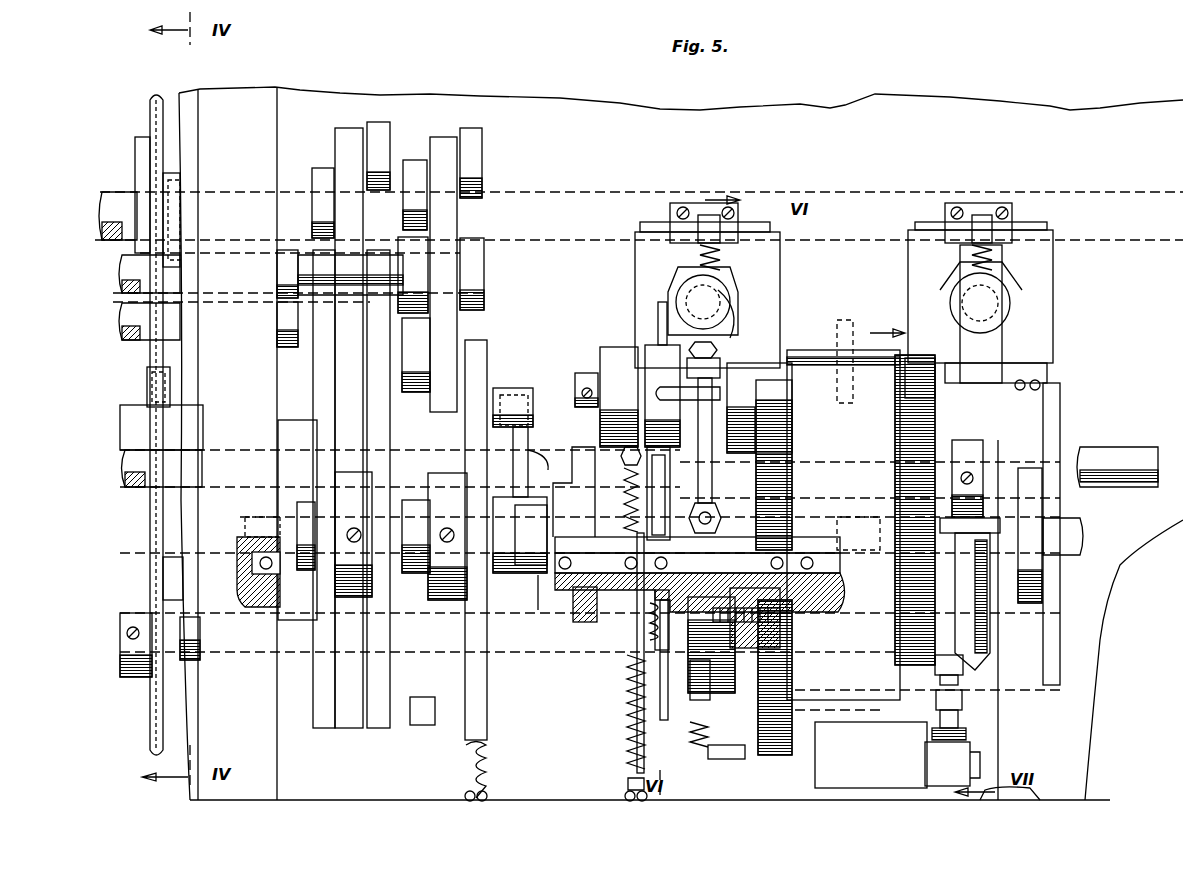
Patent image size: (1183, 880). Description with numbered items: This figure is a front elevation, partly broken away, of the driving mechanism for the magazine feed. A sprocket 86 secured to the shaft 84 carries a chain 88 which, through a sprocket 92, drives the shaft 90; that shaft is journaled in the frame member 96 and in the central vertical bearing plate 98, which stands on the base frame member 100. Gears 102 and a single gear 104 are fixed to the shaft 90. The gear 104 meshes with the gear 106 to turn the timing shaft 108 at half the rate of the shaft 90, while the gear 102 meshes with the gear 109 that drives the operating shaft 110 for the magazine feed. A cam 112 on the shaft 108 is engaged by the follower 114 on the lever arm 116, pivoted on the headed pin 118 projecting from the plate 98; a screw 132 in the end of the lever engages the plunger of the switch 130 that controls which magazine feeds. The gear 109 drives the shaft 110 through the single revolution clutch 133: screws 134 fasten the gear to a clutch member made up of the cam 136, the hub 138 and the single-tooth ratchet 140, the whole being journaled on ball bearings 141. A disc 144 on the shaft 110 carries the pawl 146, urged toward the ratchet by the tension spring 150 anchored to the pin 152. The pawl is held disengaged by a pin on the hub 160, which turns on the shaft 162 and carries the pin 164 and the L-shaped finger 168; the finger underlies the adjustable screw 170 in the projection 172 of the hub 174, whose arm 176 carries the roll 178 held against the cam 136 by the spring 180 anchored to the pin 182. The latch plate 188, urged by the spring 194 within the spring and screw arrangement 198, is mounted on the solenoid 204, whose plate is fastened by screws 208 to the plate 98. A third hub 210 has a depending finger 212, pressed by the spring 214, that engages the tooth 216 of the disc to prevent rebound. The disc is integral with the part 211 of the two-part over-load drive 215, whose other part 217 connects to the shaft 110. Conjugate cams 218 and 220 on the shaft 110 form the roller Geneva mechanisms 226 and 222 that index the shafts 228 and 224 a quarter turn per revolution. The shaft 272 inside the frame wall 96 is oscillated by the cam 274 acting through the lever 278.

The shaft 84 is at (124, 192).
The sprocket 86 is at (150, 102).
The chain 88 is at (147, 386).
The shaft 90 is at (518, 547).
The sprocket 92 is at (150, 740).
The frame member 96 is at (278, 580).
The central vertical bearing plate 98 is at (862, 598).
The base frame member 100 is at (408, 798).
The gear 102 is at (764, 757).
The single gear 104 is at (740, 685).
The gear 106 is at (740, 425).
The timing shaft 108 is at (822, 462).
The gear 109 is at (780, 665).
The operating shaft 110 is at (828, 512).
The cam 112 is at (940, 432).
The follower 114 is at (1011, 535).
The lever arm 116 is at (992, 632).
The headed pin 118 is at (966, 708).
The switch 130 is at (970, 745).
The screw 132 is at (965, 670).
The single revolution clutch 133 is at (594, 696).
The screws 134 is at (782, 618).
The cam 136 is at (782, 650).
The hub 138 is at (662, 648).
The ratchet 140 is at (640, 600).
The ball bearings 141 is at (760, 567).
The disc 144 is at (660, 690).
The pawl 146 is at (693, 544).
The tension spring 150 is at (628, 628).
The pin 152 is at (637, 658).
The hub 160 is at (636, 348).
The shaft 162 is at (578, 385).
The pin 164 is at (655, 312).
The L-shaped finger 168 is at (690, 410).
The adjustable screw 170 is at (718, 343).
The projection 172 is at (720, 366).
The hub 174 is at (744, 314).
The arm 176 is at (672, 476).
The roll 178 is at (745, 550).
The spring 180 is at (690, 740).
The pin 182 is at (712, 760).
The latch plate 188 is at (728, 292).
The spring 194 is at (700, 258).
The spring 198 is at (698, 278).
The solenoid 204 is at (782, 300).
The screws 208 is at (856, 355).
The third hub 210 is at (600, 342).
The part of two-part over-load drive 211 is at (572, 620).
The depending finger 212 is at (620, 542).
The spring 214 is at (627, 728).
The two-part over-load drive 215 is at (558, 438).
The tooth 216 is at (626, 533).
The part of two-part over-load drive 217 is at (553, 593).
The conjugate cams 218 is at (332, 728).
The conjugate cams 220 is at (440, 727).
The roller Geneva mechanism 222 is at (492, 327).
The shaft 224 is at (122, 280).
The roller Geneva mechanism 226 is at (385, 120).
The shaft 228 is at (122, 336).
The shaft 272 is at (125, 487).
The cam 274 is at (437, 711).
The lever 278 is at (487, 731).